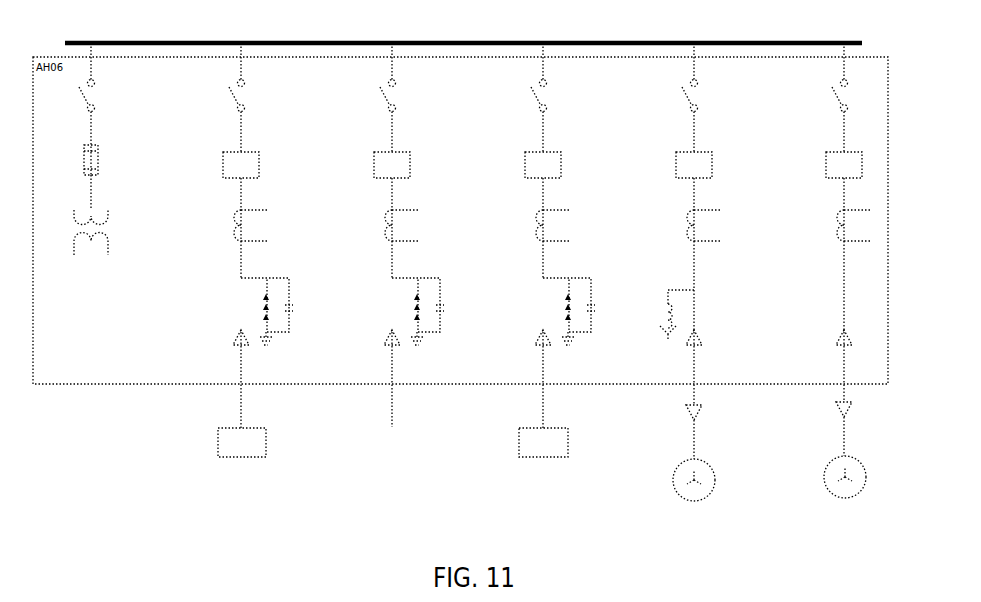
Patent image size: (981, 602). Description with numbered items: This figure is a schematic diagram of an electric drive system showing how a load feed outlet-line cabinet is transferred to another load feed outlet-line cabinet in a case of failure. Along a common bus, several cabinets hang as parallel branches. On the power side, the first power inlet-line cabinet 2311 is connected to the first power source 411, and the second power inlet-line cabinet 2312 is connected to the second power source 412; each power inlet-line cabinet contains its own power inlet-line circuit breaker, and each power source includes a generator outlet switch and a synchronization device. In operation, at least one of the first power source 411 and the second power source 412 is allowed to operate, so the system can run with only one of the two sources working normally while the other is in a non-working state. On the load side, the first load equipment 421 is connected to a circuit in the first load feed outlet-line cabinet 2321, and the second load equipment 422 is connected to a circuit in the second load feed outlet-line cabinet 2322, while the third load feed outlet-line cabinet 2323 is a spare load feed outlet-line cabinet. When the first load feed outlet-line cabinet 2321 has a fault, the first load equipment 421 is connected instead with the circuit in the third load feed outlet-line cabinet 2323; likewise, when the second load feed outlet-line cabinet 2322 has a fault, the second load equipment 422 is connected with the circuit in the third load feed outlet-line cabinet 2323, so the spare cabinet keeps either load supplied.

The first power inlet-line cabinet 2311 is at (848, 62).
The second power inlet-line cabinet 2312 is at (697, 58).
The first load feed outlet-line cabinet 2321 is at (545, 58).
The second load feed outlet-line cabinet 2322 is at (394, 67).
The third load feed outlet-line cabinet 2323 is at (243, 62).
The first power source 411 is at (845, 488).
The second power source 412 is at (694, 497).
The first load equipment 421 is at (546, 452).
The second load equipment 422 is at (237, 448).